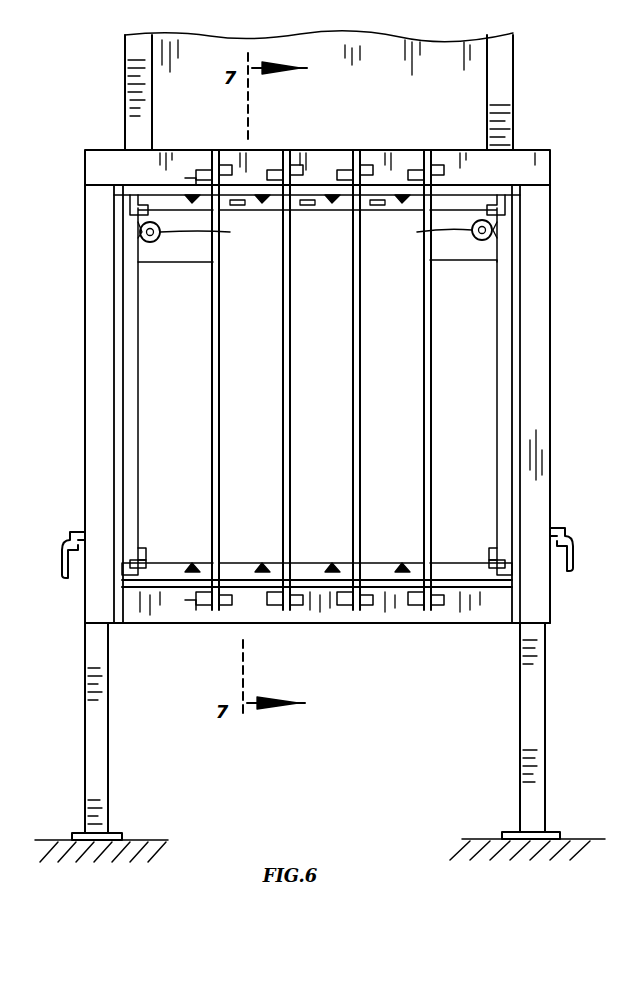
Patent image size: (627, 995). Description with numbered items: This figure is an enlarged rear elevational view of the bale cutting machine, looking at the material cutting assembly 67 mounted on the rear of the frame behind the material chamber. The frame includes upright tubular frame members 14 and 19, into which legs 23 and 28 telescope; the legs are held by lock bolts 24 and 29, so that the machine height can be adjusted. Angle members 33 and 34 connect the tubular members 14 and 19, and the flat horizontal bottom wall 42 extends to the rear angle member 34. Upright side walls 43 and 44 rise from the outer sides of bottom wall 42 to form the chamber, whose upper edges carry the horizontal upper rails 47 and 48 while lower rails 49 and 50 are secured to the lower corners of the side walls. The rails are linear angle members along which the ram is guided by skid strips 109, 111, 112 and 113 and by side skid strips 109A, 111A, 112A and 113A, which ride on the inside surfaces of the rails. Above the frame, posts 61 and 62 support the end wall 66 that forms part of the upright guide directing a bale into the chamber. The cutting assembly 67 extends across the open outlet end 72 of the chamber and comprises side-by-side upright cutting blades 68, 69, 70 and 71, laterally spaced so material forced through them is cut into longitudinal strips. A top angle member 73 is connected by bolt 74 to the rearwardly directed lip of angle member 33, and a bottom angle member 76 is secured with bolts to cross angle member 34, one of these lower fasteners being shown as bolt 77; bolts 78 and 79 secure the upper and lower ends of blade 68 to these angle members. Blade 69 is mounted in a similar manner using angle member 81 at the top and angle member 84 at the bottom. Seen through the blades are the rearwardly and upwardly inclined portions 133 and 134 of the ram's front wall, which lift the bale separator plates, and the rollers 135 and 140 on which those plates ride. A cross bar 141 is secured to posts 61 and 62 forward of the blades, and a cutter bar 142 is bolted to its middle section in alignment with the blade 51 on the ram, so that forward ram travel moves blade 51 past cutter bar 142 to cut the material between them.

The upright tubular frame member 14 is at (100, 343).
The upright tubular member 19 is at (537, 343).
The leg 23 is at (90, 732).
The lock bolt 24 is at (62, 540).
The leg 28 is at (540, 732).
The lock bolt 29 is at (575, 535).
The angle member 33 is at (540, 167).
The angle member 34 is at (475, 612).
The bottom wall 42 is at (400, 600).
The side wall 43 is at (515, 298).
The side wall 44 is at (114, 295).
The upper rail 47 is at (520, 203).
The upper rail 48 is at (122, 203).
The lower rail 49 is at (505, 568).
The lower rail 50 is at (135, 565).
The blade 51 is at (327, 195).
The post 61 is at (125, 68).
The post 62 is at (505, 68).
The end wall 66 is at (445, 88).
The material cutting assembly 67 is at (330, 655).
The cutting blade 68 is at (210, 423).
The cutting blade 69 is at (282, 423).
The cutting blade 70 is at (352, 423).
The cutting blade 71 is at (423, 423).
The open outlet end 72 is at (125, 388).
The top angle member 73 is at (208, 165).
The bolt 74 is at (190, 175).
The bottom angle member 76 is at (198, 605).
The lower clamp 77 is at (180, 605).
The bolt 78 is at (225, 160).
The bolt 79 is at (210, 612).
The angle member 81 is at (280, 167).
The angle member 84 is at (264, 605).
The skid strip 109 is at (142, 563).
The side skid strip 109A is at (143, 552).
The skid strip 111 is at (490, 562).
The side skid strip 111A is at (498, 545).
The skid strip 112 is at (487, 195).
The side skid strip 112A is at (492, 236).
The skid strip 113 is at (150, 207).
The side skid strip 113A is at (138, 236).
The inclined portion 133 is at (176, 250).
The inclined portion 134 is at (465, 250).
The roller 135 is at (214, 231).
The roller 140 is at (424, 232).
The cross bar 141 is at (400, 190).
The cutter bar 142 is at (335, 205).